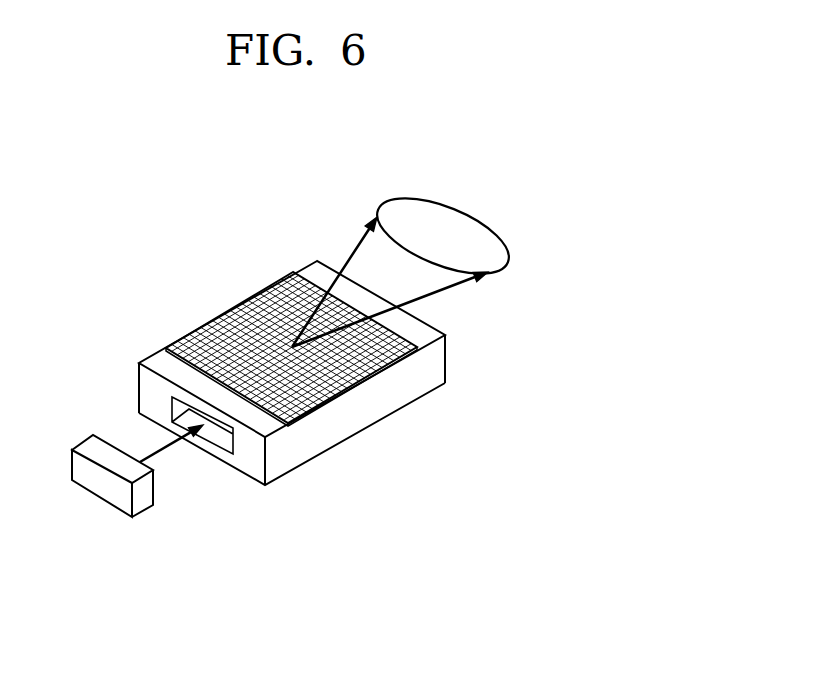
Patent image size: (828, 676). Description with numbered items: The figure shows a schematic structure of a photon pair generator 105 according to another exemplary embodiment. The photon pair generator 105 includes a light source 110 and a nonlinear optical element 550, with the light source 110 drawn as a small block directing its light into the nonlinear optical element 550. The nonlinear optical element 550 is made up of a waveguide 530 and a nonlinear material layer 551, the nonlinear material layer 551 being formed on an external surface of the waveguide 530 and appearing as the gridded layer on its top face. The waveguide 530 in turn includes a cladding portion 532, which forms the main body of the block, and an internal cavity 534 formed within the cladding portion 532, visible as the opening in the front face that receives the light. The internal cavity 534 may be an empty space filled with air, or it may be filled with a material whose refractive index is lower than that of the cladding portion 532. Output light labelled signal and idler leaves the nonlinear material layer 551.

The photon pair generator 105 is at (582, 250).
The light source 110 is at (85, 448).
The waveguide 530 is at (292, 429).
The cladding portion 532 is at (278, 463).
The internal cavity 534 is at (205, 470).
The nonlinear optical element 550 is at (314, 429).
The nonlinear material layer 551 is at (203, 332).